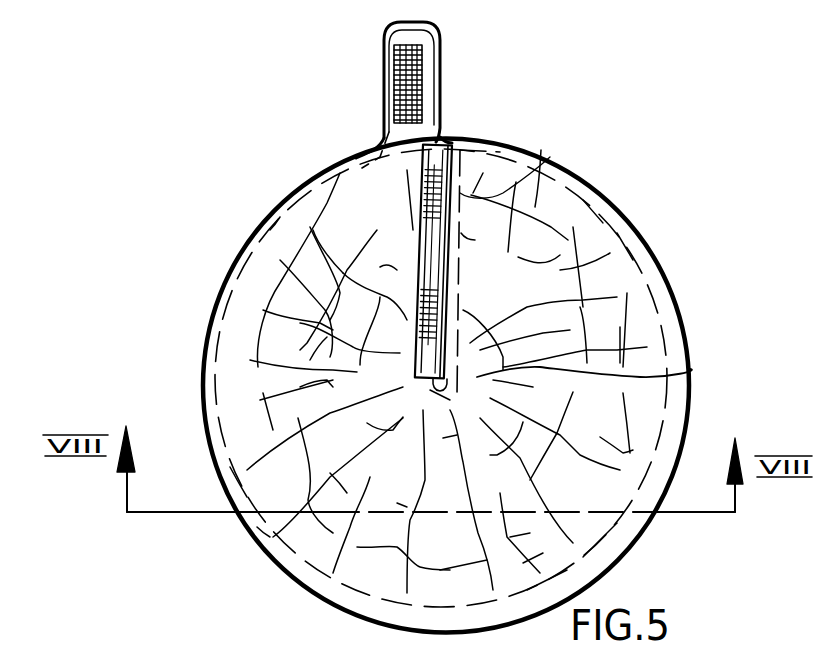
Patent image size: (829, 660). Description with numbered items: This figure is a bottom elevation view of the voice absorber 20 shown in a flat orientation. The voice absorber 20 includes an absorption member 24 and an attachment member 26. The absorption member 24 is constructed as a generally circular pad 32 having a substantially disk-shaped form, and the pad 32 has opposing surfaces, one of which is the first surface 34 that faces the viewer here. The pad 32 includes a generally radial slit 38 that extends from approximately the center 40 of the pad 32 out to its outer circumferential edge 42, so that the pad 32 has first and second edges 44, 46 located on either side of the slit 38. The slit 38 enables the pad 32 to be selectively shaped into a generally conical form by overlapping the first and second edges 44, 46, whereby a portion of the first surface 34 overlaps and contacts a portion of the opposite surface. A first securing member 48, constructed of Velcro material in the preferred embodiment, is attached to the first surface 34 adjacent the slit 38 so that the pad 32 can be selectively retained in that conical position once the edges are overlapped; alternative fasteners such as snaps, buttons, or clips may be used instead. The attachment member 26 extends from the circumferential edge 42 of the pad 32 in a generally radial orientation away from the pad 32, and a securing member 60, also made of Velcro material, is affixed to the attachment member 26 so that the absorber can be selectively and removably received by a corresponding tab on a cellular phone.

The voice absorber 20 is at (208, 213).
The absorption member 24 is at (208, 333).
The attachment member 26 is at (384, 66).
The pad 32 is at (627, 293).
The first surface 34 is at (573, 227).
The radial slit 38 is at (468, 265).
The center 40 is at (690, 369).
The circumferential edge 42 is at (275, 563).
The first edge 44 is at (462, 292).
The second edge 46 is at (438, 135).
The first securing member 48 is at (413, 227).
The securing member 60 is at (420, 77).